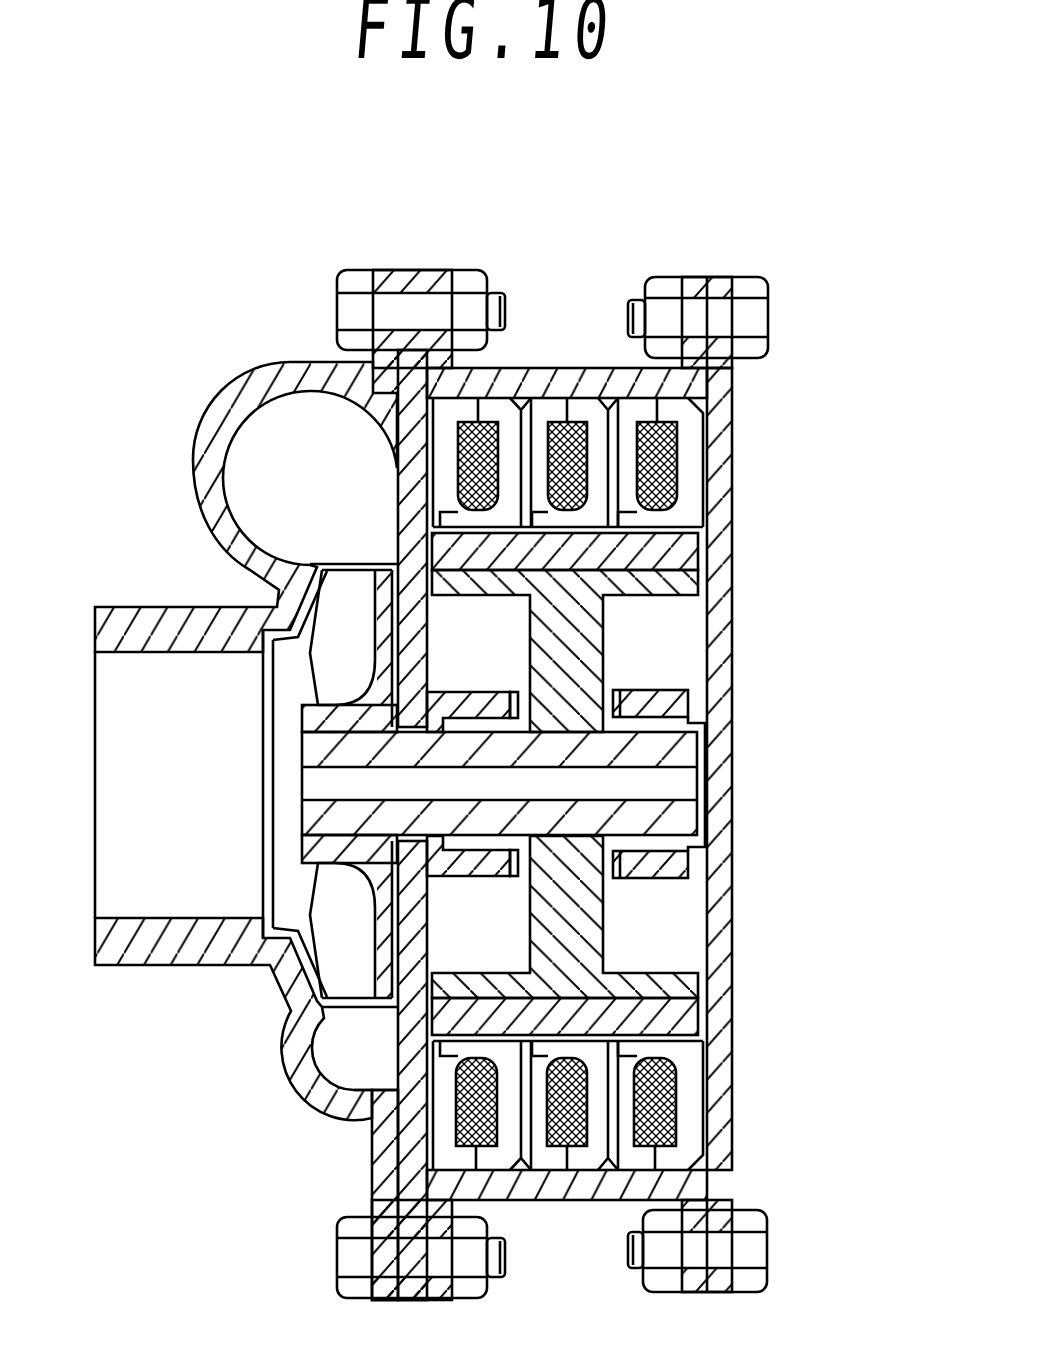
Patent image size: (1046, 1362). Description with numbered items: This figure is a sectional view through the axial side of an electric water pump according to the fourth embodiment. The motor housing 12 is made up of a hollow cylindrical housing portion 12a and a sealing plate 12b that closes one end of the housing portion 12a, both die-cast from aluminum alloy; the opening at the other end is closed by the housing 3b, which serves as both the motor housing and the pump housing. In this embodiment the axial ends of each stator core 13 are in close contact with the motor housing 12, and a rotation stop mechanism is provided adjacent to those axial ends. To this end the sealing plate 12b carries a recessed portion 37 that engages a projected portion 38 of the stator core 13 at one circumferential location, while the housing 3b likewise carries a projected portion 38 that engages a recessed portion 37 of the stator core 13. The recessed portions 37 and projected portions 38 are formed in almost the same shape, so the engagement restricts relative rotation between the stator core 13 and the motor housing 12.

The housing 3b is at (470, 785).
The projected portion 38 is at (253, 741).
The motor housing 12 is at (567, 310).
The housing portion 12a is at (567, 1245).
The sealing plate 12b is at (775, 784).
The recessed portion 37 is at (630, 462).
The stator core 13 is at (634, 1105).